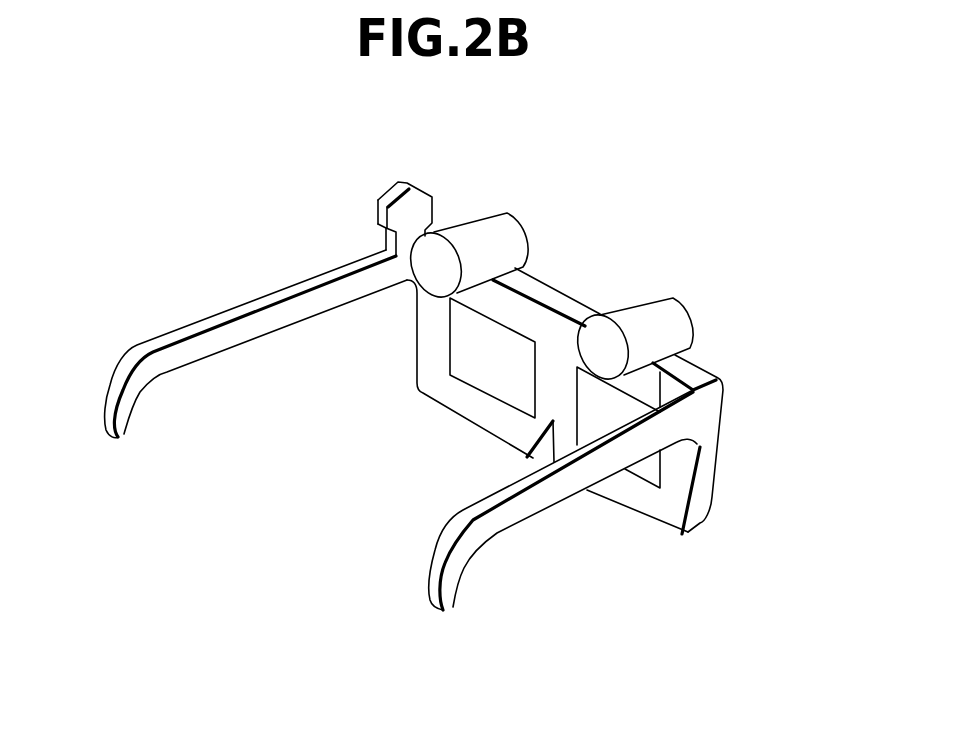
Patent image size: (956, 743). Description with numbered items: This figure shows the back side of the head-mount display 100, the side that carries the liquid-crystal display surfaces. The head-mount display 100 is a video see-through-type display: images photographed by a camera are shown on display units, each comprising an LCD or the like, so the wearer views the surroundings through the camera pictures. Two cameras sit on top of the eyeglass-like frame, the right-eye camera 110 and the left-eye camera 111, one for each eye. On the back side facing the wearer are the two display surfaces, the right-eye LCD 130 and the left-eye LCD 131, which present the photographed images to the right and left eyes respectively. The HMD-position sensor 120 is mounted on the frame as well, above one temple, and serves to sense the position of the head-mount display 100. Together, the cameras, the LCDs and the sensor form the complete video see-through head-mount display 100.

The head-mount display 100 is at (705, 546).
The right-eye camera 110 is at (652, 308).
The left-eye camera 111 is at (492, 220).
The HMD-position sensor 120 is at (398, 185).
The right-eye LCD 130 is at (600, 405).
The left-eye LCD 131 is at (473, 340).